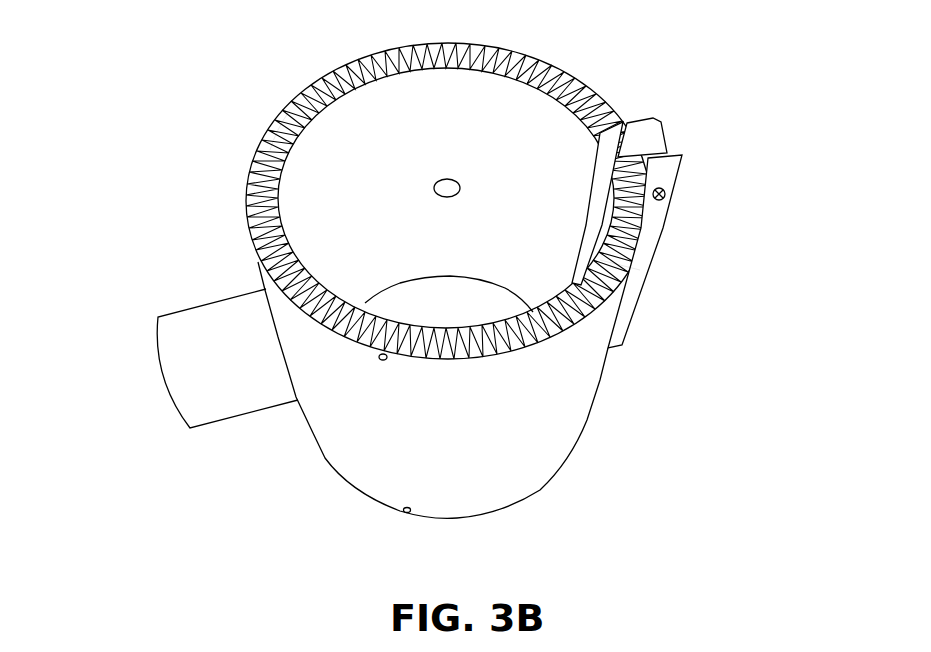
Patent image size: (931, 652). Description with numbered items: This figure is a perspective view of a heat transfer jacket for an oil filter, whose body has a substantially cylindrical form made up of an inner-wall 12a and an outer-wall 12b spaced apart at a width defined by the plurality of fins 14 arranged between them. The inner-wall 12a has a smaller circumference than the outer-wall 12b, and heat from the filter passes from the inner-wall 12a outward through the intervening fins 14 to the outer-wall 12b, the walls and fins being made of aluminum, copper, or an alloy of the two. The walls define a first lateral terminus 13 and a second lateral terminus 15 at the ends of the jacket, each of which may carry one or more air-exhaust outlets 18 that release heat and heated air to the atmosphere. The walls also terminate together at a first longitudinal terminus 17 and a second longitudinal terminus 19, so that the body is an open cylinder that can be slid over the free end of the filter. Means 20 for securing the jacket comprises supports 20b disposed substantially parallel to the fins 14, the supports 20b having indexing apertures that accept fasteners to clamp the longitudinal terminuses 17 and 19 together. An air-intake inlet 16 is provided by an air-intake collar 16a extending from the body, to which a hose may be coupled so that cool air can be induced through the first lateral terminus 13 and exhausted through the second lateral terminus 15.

The inner-wall 12a is at (460, 142).
The outer-wall 12b is at (462, 451).
The first lateral terminus 13 is at (256, 158).
The fins 14 is at (636, 272).
The second lateral terminus 15 is at (316, 454).
The air-intake inlet 16 is at (175, 343).
The air-intake collar 16a is at (188, 314).
The first longitudinal terminus 17 is at (658, 120).
The air-exhaust outlets 18 is at (328, 79).
The second longitudinal terminus 19 is at (675, 180).
The means for securing the jacket 20 is at (675, 158).
The supports 20b is at (636, 120).